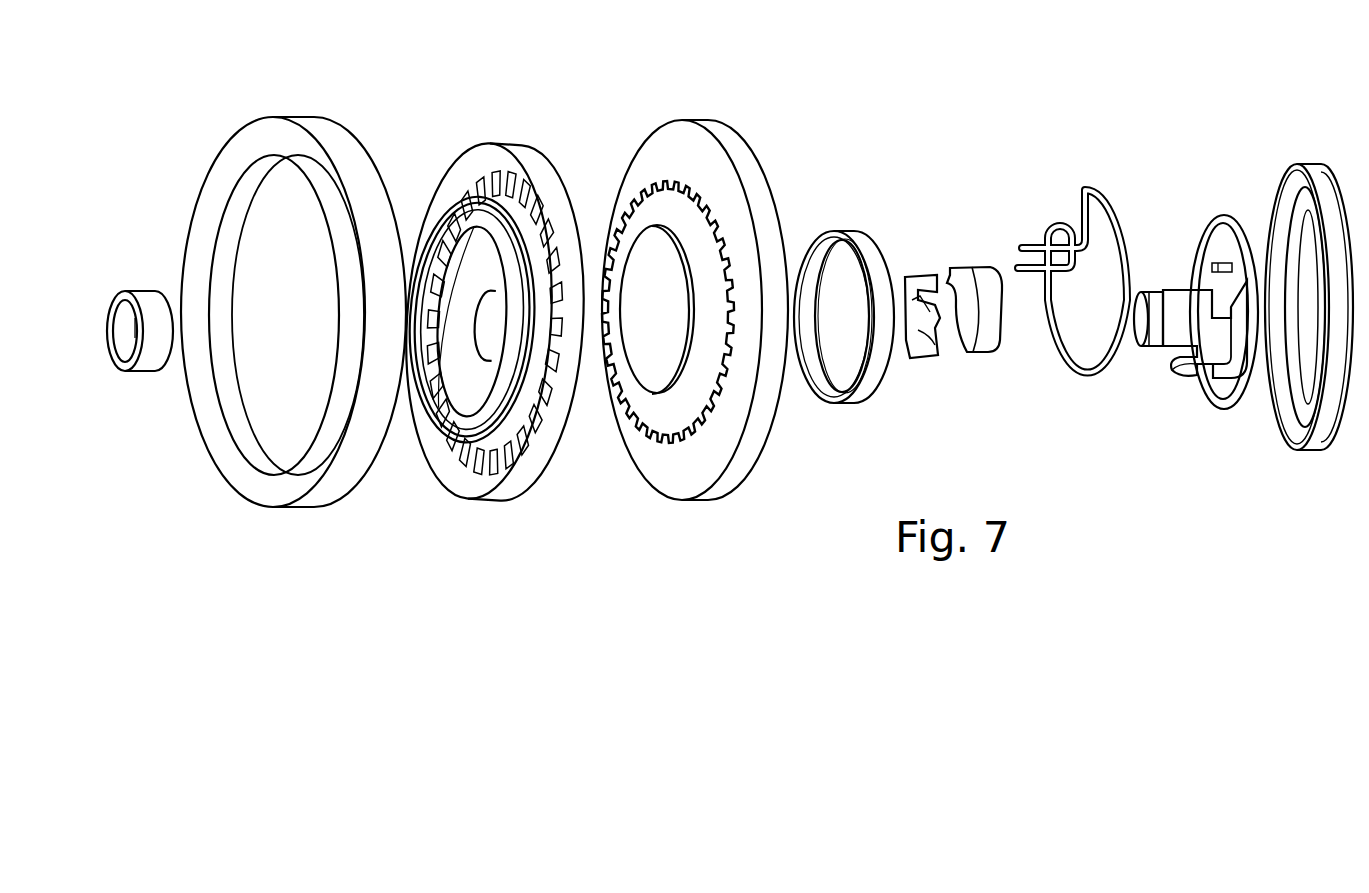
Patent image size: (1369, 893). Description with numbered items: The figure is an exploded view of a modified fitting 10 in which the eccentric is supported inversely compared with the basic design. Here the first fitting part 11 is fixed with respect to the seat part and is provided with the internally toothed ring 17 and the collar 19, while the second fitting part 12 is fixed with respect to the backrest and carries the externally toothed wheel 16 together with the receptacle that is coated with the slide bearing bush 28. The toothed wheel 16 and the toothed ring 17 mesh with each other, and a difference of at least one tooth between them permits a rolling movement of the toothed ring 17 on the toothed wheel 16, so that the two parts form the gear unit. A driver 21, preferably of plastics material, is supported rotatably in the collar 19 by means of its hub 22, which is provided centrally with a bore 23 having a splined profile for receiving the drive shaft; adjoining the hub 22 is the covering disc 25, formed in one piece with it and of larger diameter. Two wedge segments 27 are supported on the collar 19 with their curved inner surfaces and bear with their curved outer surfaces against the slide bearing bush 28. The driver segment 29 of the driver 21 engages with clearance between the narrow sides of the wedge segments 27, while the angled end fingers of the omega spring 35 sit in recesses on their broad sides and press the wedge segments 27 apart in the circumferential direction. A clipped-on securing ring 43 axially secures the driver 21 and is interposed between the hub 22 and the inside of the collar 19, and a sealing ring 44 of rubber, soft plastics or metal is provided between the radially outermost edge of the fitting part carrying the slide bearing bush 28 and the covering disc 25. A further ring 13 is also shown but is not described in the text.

The fitting 10 is at (898, 125).
The first fitting part 11 is at (480, 302).
The second fitting part 12 is at (704, 310).
The outer ring 13 is at (263, 485).
The externally toothed wheel 16 is at (677, 182).
The internally toothed ring 17 is at (473, 163).
The collar 19 is at (485, 323).
The driver 21 is at (1224, 326).
The hub 22 is at (1179, 349).
The bore 23 is at (1143, 343).
The covering disc 25 is at (1220, 230).
The wedge segments 27 is at (980, 275).
The slide bearing bush 28 is at (818, 273).
The driver segment 29 is at (1225, 353).
The omega spring 35 is at (1078, 408).
The securing ring 43 is at (155, 372).
The sealing ring 44 is at (1310, 407).